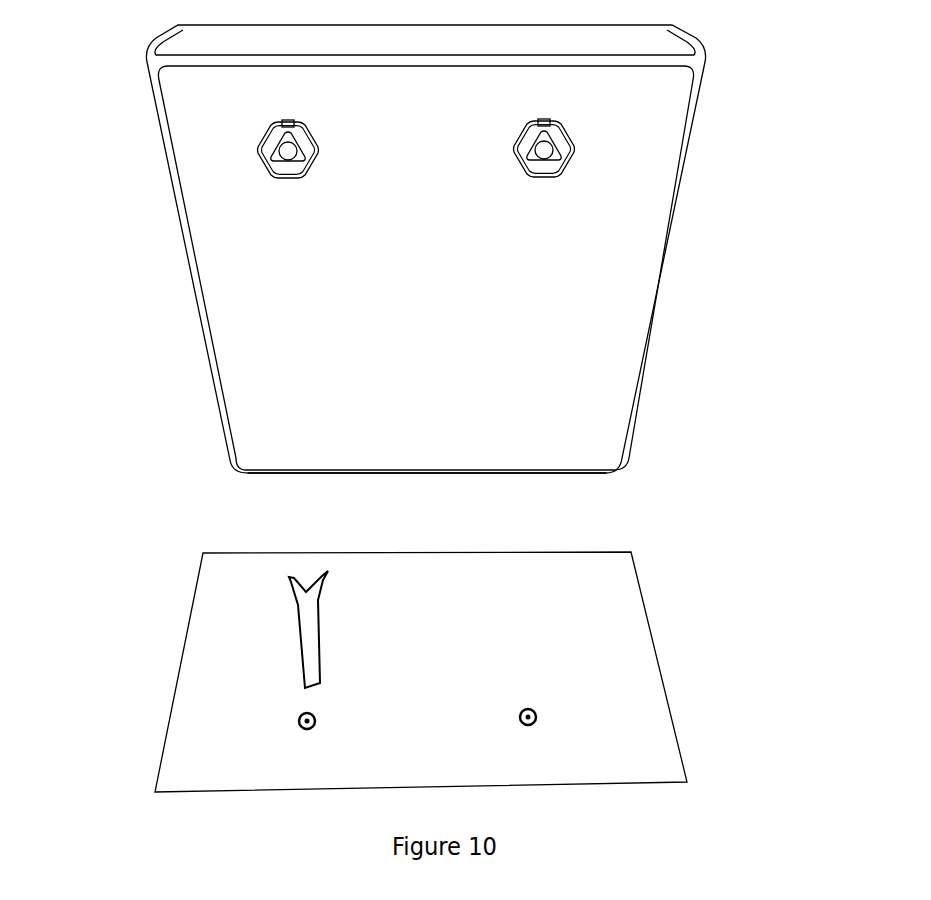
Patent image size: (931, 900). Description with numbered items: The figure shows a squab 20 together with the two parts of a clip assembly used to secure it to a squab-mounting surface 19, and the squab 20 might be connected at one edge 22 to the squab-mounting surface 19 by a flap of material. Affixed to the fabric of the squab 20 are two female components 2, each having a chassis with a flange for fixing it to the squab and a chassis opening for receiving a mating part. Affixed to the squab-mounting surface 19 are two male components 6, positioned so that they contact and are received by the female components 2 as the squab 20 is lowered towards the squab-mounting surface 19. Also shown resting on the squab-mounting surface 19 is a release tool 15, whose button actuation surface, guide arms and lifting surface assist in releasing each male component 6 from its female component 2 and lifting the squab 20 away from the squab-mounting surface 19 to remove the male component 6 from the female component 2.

The female component 2 is at (327, 168).
The squab 20 is at (578, 267).
The edge 22 is at (570, 465).
The squab-mounting surface 19 is at (558, 610).
The release tool 15 is at (308, 620).
The male component 6 is at (300, 713).